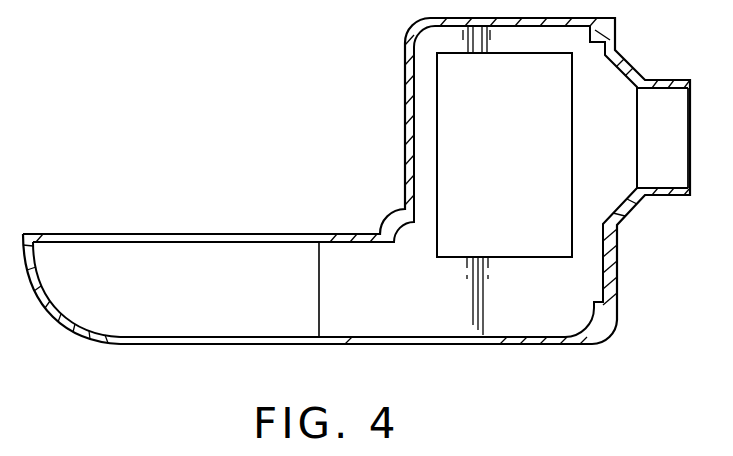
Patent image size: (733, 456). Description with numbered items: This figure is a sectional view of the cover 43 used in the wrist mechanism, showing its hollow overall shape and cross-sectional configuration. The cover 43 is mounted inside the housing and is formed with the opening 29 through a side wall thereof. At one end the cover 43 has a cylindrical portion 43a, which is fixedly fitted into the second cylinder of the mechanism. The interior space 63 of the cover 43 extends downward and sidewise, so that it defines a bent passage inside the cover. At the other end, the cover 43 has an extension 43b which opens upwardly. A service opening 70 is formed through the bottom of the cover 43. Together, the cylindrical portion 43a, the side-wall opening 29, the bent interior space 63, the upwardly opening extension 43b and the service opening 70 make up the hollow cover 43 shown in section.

The cover 43 is at (385, 108).
The cylindrical portion 43a is at (667, 79).
The extension 43b is at (82, 330).
The opening 29 is at (568, 124).
The interior space 63 is at (395, 308).
The service opening 70 is at (497, 338).